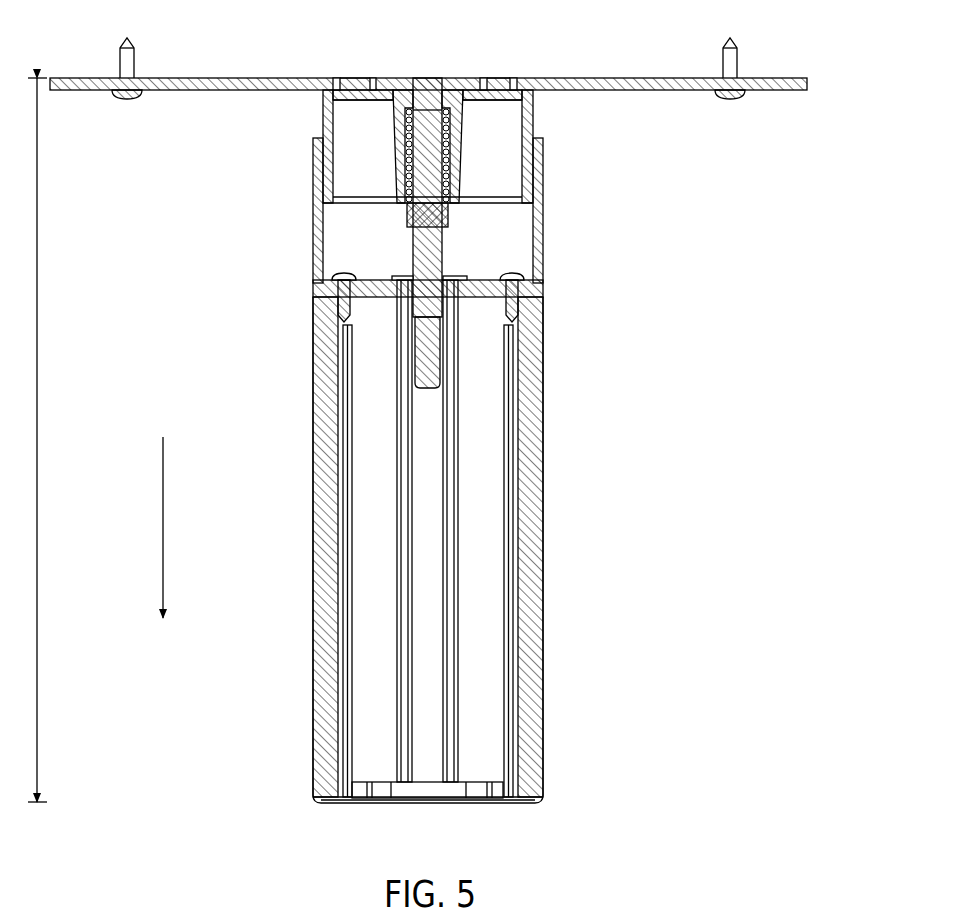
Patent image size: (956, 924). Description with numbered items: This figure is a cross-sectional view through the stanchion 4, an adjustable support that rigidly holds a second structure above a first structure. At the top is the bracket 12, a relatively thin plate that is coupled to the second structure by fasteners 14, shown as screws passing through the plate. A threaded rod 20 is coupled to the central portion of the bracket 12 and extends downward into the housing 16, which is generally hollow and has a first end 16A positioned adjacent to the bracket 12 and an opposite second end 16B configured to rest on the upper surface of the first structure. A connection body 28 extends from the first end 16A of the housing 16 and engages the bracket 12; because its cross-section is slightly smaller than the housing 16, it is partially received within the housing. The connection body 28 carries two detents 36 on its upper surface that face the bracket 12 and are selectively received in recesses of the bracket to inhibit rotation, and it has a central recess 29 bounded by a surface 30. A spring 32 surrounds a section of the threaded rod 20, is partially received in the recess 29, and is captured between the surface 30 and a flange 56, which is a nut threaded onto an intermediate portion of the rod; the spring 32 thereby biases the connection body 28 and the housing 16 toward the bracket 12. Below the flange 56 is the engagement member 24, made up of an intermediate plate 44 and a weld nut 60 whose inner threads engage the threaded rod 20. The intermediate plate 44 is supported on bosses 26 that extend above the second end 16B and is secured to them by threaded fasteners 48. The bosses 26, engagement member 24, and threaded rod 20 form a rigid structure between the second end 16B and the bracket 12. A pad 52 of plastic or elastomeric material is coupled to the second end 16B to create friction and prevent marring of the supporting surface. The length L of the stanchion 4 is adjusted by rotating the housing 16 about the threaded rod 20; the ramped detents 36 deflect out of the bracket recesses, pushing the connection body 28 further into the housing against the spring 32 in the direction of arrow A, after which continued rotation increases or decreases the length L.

The stanchion 4 is at (680, 425).
The bracket 12 is at (172, 80).
The fasteners 14 is at (120, 65).
The housing 16 is at (318, 490).
The first end 16A is at (541, 186).
The second end 16B is at (545, 796).
The threaded rod 20 is at (418, 245).
The engagement member 24 is at (546, 278).
The bosses 26 is at (345, 690).
The connection body 28 is at (533, 126).
The recess 29 is at (397, 168).
The surface 30 is at (410, 102).
The spring 32 is at (448, 140).
The detents 36 is at (335, 91).
The intermediate plate 44 is at (462, 300).
The threaded fasteners 48 is at (332, 322).
The pad 52 is at (430, 792).
The flange 56 is at (407, 218).
The weld nut 60 is at (450, 279).
The length L is at (37, 330).
The arrow A is at (163, 476).